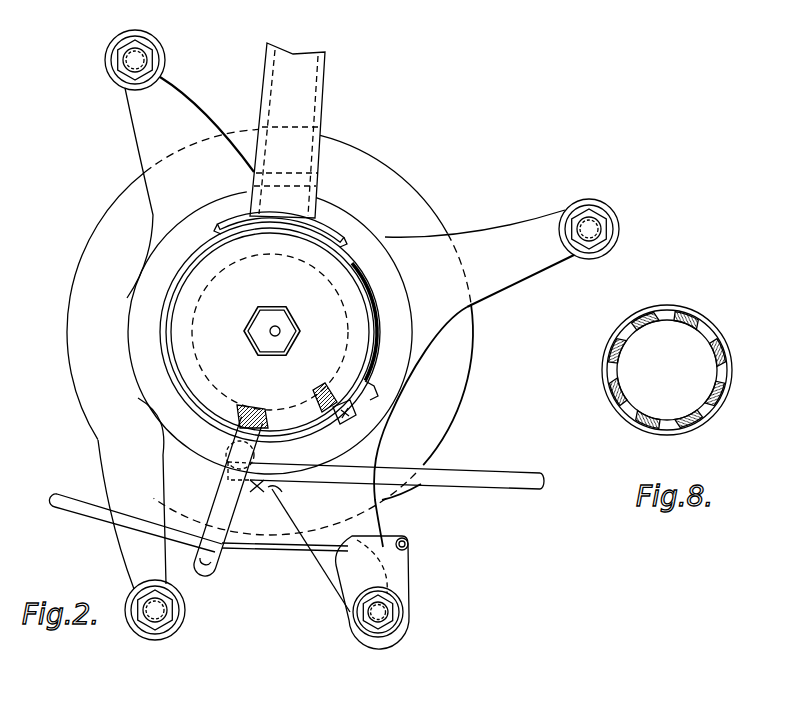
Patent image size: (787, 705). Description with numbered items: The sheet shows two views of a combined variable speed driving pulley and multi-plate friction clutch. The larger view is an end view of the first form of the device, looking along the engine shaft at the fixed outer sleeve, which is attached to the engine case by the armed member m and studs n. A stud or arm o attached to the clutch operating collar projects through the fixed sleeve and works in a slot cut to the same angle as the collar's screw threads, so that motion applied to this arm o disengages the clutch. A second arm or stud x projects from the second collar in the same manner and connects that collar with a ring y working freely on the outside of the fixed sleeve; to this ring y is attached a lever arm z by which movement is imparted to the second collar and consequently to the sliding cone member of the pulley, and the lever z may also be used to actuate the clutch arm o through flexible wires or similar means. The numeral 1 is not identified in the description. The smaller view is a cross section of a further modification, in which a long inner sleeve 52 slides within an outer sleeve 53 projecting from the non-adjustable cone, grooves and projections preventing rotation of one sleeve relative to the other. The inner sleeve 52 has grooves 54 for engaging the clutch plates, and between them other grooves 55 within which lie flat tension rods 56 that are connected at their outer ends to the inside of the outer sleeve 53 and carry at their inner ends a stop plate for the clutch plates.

In FIG. 2, the studs n is at (135, 70).
In FIG. 2, the lever arm z is at (273, 93).
In FIG. 2, the armed member m is at (481, 242).
In FIG. 2, the stud or arm o is at (224, 490).
In FIG. 2, the arm or stud x is at (258, 499).
In FIG. 2, the brake band 1 is at (380, 378).
In FIG. 2, the ring y is at (360, 398).
In FIG. 8, the long sleeve 52 is at (708, 416).
In FIG. 8, the sleeve 53 is at (640, 316).
In FIG. 8, the grooves 54 is at (702, 333).
In FIG. 8, the other grooves 55 is at (612, 375).
In FIG. 8, the flat tension rods 56 is at (668, 420).